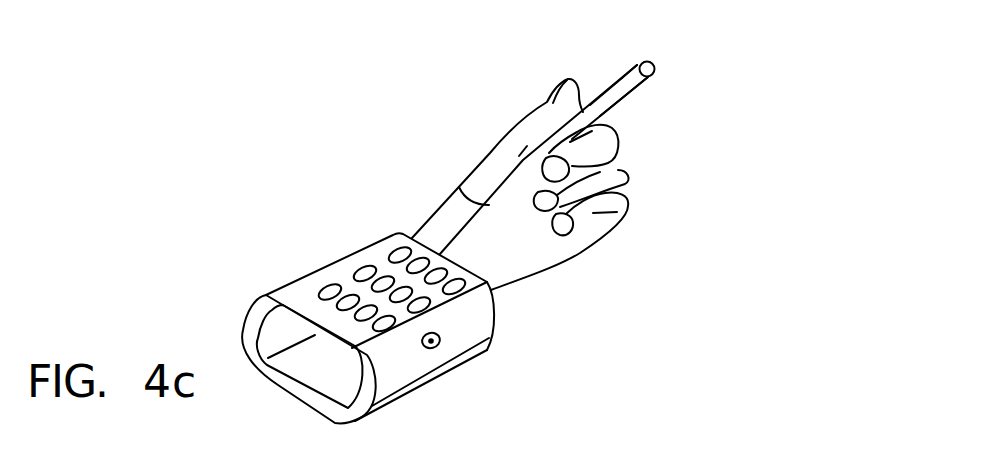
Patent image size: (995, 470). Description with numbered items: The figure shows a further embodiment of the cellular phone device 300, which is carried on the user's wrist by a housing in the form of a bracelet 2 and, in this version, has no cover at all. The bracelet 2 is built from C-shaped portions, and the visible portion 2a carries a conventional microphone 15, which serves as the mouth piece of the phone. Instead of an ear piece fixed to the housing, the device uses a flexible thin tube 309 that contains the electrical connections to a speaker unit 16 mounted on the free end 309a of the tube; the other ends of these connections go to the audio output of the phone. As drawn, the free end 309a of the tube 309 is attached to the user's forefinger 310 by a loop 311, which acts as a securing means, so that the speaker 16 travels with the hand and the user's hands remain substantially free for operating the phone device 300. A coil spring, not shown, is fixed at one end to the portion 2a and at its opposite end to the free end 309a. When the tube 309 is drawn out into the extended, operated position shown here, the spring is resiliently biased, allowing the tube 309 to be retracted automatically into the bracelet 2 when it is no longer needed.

The bracelet 2 is at (325, 312).
The C-shaped portion 2a is at (402, 367).
The microphone 15 is at (441, 340).
The speaker unit 16 is at (641, 62).
The cellular phone device 300 is at (331, 251).
The flexible thin tube 309 is at (459, 187).
The free end 309a is at (617, 88).
The forefinger 310 is at (655, 63).
The loop 311 is at (653, 78).